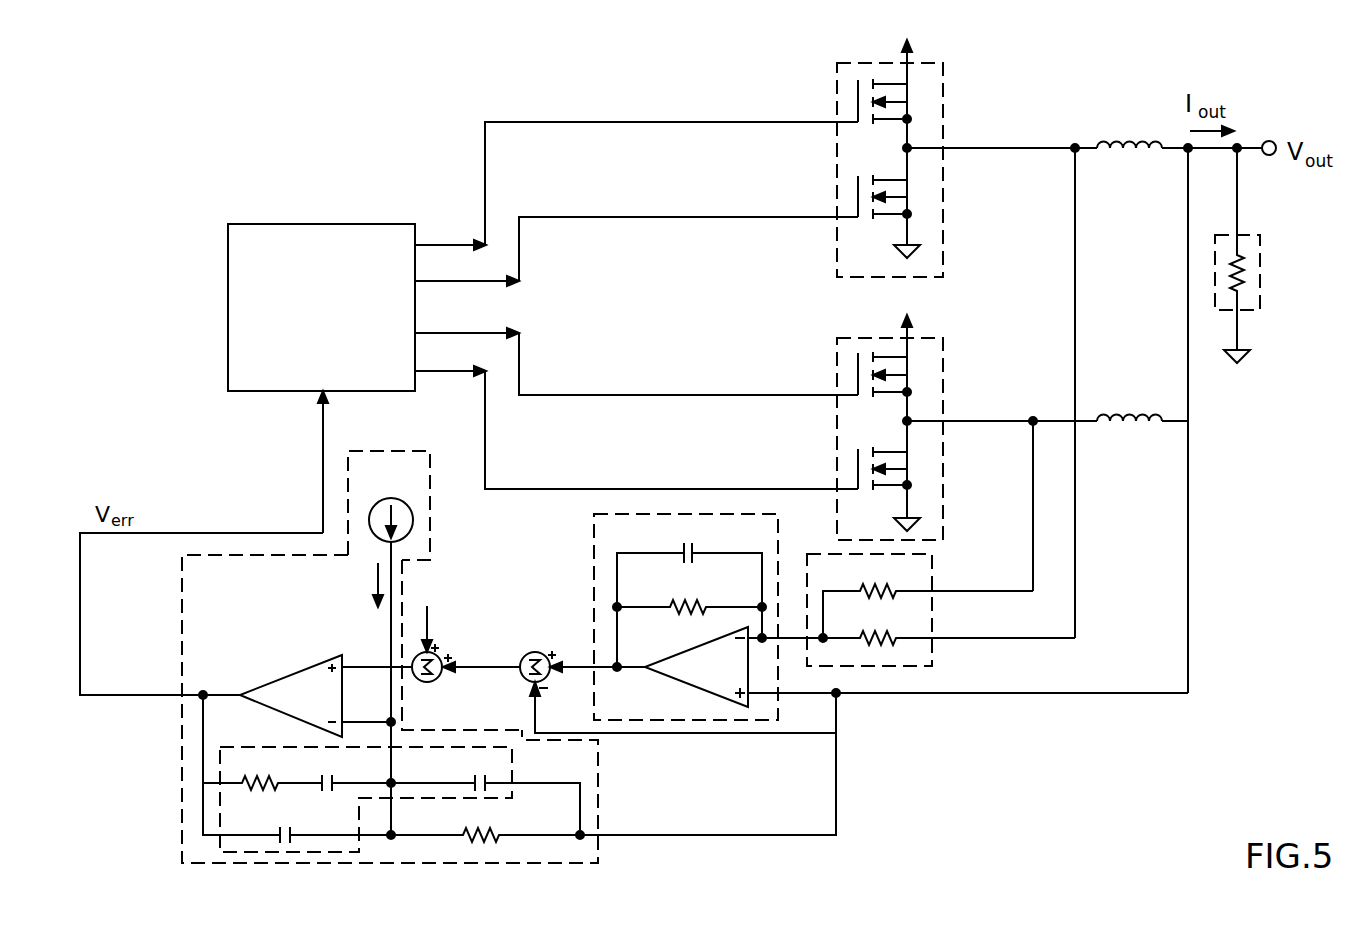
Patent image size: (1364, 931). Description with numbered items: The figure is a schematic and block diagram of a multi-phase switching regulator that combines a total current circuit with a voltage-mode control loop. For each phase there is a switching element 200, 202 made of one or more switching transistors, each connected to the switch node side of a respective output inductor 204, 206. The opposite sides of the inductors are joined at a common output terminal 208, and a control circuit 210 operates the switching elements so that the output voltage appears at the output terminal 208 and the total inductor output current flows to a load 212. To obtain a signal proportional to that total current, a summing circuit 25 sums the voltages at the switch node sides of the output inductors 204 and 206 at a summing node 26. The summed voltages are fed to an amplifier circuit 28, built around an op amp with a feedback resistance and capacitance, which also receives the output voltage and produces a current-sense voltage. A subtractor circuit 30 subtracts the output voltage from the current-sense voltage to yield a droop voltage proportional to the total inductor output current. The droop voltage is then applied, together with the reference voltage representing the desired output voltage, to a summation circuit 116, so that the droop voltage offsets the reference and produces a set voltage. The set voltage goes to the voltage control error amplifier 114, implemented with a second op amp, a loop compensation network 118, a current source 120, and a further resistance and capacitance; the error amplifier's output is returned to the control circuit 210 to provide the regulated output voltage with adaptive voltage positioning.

The switching element 200 is at (835, 88).
The switching element 202 is at (835, 362).
The output inductor 204 is at (1116, 172).
The output inductor 206 is at (1116, 446).
The common output terminal 208 is at (1188, 143).
The control circuit 210 is at (325, 223).
The load 212 is at (1262, 258).
The summing circuit 25 is at (932, 628).
The summing node 26 is at (822, 636).
The amplifier circuit 28 is at (593, 560).
The subtractor circuit 30 is at (534, 652).
The voltage control error amplifier 114 is at (181, 800).
The summation circuit 116 is at (432, 682).
The loop compensation network 118 is at (275, 745).
The current source 120 is at (373, 503).